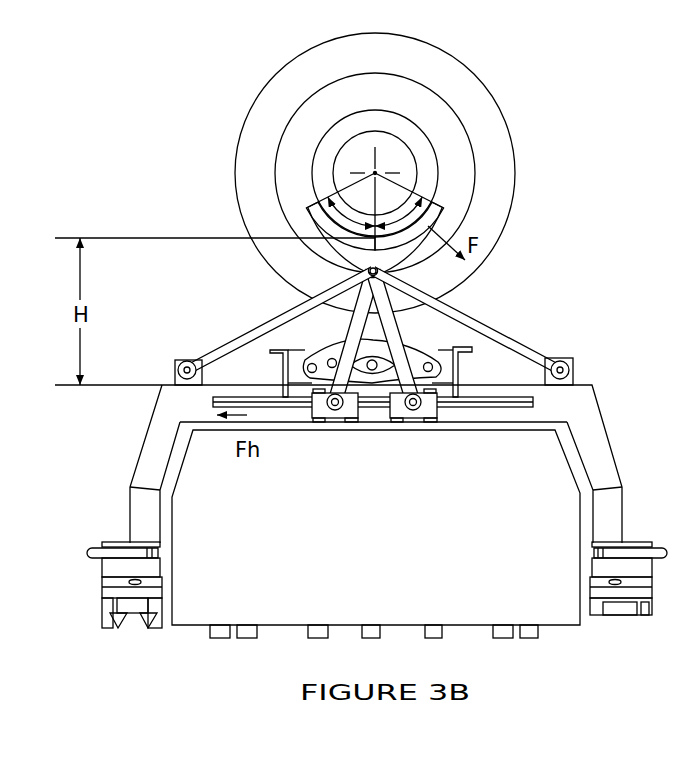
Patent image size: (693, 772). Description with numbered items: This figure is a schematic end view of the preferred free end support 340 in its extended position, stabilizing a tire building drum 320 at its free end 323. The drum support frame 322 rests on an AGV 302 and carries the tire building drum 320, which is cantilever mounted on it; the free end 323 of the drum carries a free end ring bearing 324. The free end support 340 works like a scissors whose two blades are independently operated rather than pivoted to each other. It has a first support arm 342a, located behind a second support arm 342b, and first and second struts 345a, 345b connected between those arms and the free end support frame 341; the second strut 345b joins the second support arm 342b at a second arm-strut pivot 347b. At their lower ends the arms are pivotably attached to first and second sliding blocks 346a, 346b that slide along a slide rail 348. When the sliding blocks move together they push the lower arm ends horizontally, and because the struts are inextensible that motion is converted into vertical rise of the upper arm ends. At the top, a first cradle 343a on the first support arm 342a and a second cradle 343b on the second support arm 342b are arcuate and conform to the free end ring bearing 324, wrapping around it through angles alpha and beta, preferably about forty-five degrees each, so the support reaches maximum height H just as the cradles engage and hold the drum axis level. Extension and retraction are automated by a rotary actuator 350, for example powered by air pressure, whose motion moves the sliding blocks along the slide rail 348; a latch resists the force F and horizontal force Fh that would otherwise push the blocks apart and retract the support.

The AGV 302 is at (198, 603).
The tire building drum 320 is at (473, 143).
The drum support frame 322 is at (142, 440).
The free end 323 is at (313, 123).
The free end ring bearing 324 is at (420, 125).
The free end support 340 is at (603, 292).
The free end support frame 341 is at (175, 360).
The first support arm 342a is at (473, 310).
The second support arm 342b is at (310, 297).
The first cradle 343a is at (307, 207).
The second cradle 343b is at (441, 210).
The first strut 345a is at (535, 345).
The second strut 345b is at (260, 330).
The first sliding block 346a is at (425, 418).
The second sliding block 346b is at (340, 418).
The second arm-strut pivot 347b is at (452, 287).
The slide rail 348 is at (585, 402).
The rotary actuator 350 is at (270, 350).